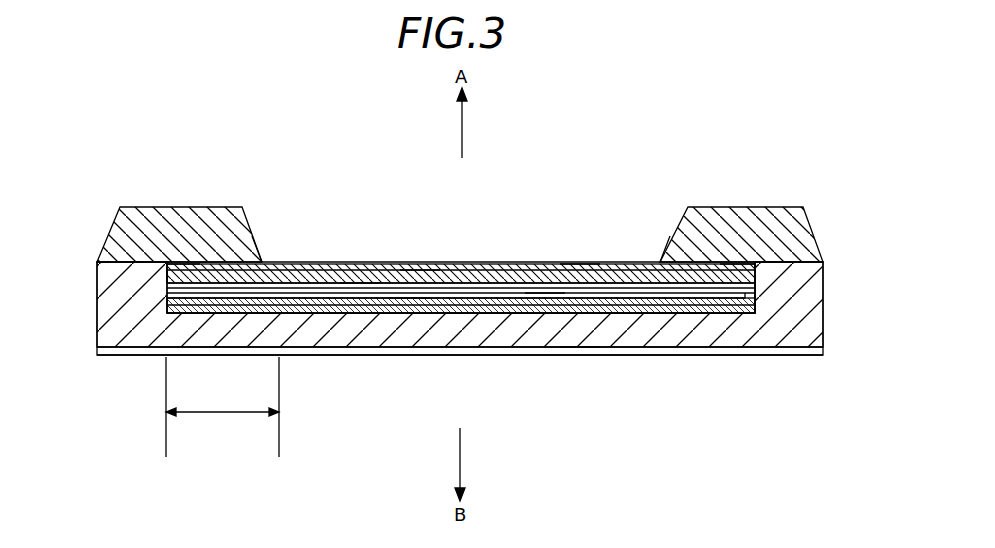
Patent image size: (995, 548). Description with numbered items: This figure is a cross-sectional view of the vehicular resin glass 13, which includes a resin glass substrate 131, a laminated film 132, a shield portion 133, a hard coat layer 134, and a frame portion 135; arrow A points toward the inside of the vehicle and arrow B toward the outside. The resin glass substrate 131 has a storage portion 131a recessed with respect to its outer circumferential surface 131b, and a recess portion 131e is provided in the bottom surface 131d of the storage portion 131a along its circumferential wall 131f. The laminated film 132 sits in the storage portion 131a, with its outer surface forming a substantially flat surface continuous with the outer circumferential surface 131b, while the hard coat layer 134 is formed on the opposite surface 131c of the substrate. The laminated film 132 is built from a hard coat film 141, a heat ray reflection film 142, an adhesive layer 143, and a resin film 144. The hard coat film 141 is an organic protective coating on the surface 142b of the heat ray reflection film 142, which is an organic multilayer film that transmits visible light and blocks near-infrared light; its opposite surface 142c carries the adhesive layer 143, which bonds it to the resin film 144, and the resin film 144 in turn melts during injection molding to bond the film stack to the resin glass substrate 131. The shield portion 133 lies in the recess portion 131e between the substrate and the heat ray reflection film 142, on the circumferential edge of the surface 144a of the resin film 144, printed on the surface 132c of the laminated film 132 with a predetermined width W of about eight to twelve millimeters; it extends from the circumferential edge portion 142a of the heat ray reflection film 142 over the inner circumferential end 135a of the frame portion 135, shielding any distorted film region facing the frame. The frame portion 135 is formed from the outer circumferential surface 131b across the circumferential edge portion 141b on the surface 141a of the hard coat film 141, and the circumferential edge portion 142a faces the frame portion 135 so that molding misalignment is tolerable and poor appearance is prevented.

The vehicular resin glass 13 is at (674, 105).
The resin glass substrate 131 is at (498, 335).
The storage portion 131a is at (757, 300).
The outer circumferential surface 131b is at (150, 262).
The surface 131c is at (672, 312).
The bottom surface 131d is at (577, 325).
The recess portion 131e is at (278, 350).
The circumferential wall 131f is at (785, 351).
The laminated film 132 is at (157, 285).
The surface 132c is at (410, 295).
The shield portion 133 is at (167, 305).
The hard coat layer 134 is at (382, 308).
The frame portion 135 is at (187, 223).
The inner circumferential end 135a is at (263, 258).
The hard coat film 141 is at (533, 266).
The surface 141a is at (577, 265).
The circumferential edge portion 141b is at (215, 250).
The heat ray reflection film 142 is at (385, 275).
The circumferential edge portion 142a is at (167, 285).
The surface 142b is at (418, 272).
The surface 142c is at (358, 278).
The adhesive layer 143 is at (475, 284).
The resin film 144 is at (445, 291).
The surface 144a is at (543, 291).
The predetermined width W is at (222, 407).